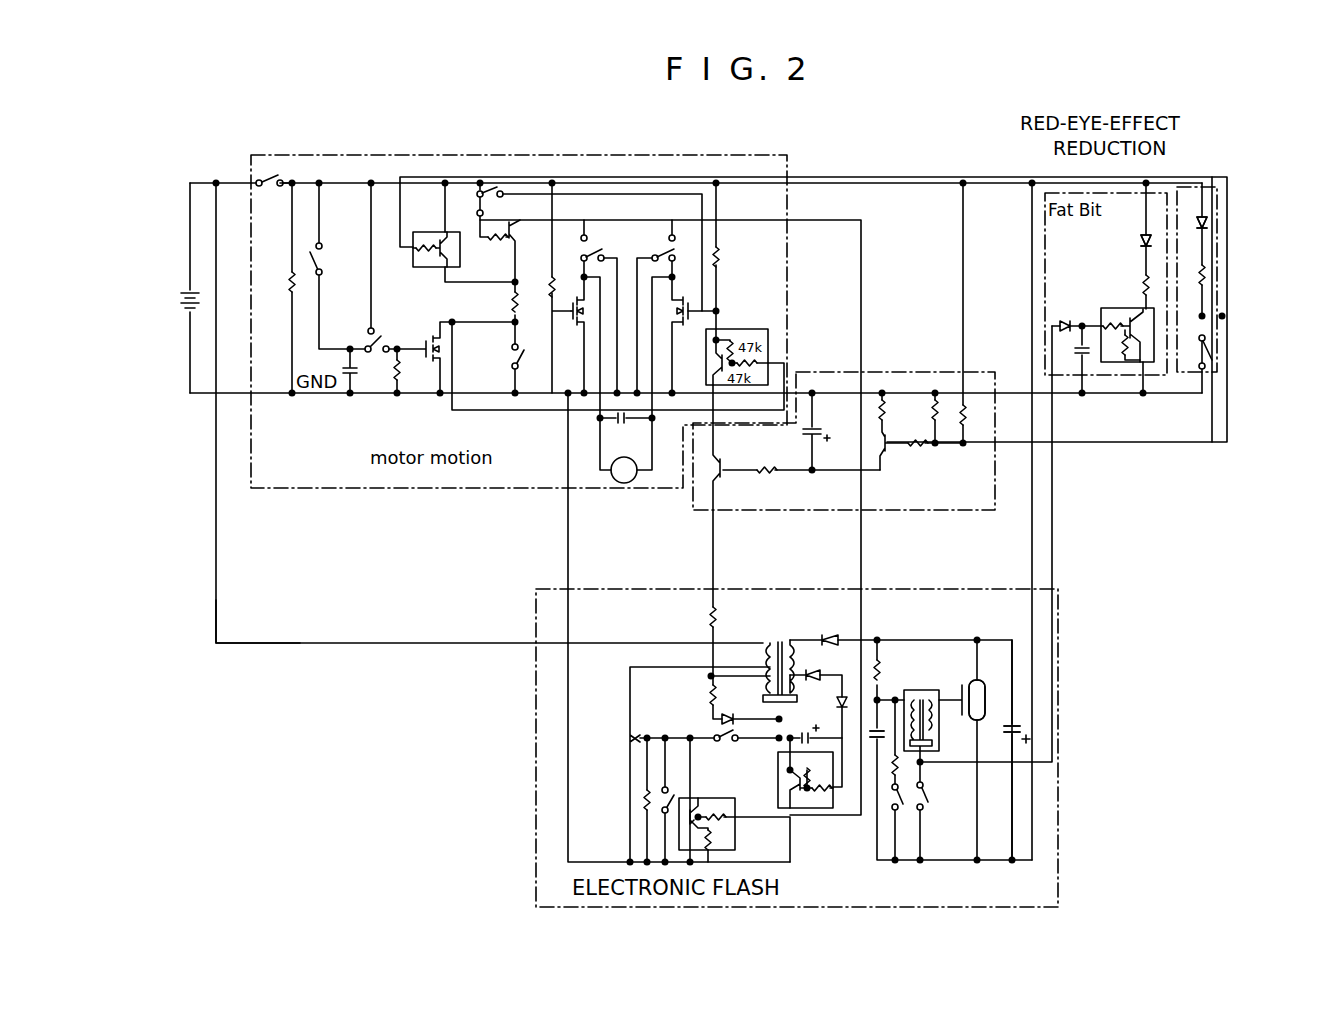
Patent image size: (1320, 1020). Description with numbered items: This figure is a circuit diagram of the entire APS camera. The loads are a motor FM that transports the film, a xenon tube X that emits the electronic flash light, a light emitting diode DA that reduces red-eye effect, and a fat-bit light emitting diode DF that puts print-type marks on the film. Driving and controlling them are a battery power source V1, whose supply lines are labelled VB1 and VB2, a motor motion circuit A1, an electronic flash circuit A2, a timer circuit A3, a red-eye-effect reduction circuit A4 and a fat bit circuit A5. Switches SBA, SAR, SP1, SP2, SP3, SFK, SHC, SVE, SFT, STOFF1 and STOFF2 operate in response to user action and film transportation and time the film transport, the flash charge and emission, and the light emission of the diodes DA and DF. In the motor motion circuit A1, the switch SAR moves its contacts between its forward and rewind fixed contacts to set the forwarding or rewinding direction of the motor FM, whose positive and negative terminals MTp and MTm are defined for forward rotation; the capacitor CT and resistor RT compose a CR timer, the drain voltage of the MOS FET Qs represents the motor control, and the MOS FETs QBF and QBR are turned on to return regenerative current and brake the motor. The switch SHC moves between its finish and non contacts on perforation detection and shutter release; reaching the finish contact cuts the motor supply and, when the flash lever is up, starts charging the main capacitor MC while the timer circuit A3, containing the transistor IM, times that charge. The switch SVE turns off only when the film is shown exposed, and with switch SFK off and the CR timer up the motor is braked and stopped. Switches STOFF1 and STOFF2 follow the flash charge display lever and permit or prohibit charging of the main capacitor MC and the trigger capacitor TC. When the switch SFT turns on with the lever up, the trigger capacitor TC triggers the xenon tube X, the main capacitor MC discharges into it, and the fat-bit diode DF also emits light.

The motor motion circuit A1 is at (498, 502).
The electronic flash circuit A2 is at (1060, 660).
The timer circuit A3 is at (910, 515).
The red-eye-effect reduction circuit A4 is at (1220, 205).
The fat bit circuit A5 is at (1045, 278).
The switch SBA is at (268, 174).
The switch SHC is at (490, 186).
The switch SFK is at (325, 252).
The switch SP1 is at (380, 338).
The MOS FET Qs is at (433, 335).
The switch SVE is at (511, 354).
The switch SAR is at (664, 246).
The MOS FET QBR is at (570, 335).
The MOS FET QBF is at (700, 321).
The motor FM is at (618, 484).
The negative terminal MT− MTm is at (579, 435).
The positive terminal MT+ MTp is at (670, 435).
The power source V1 is at (179, 314).
The battery voltage line 1 VB1 is at (286, 621).
The battery voltage line 2 VB2 is at (304, 174).
The capacitor CT is at (359, 371).
The resistor RT is at (407, 371).
The timer transistor IM is at (871, 455).
The fat-bit light emitting diode DF is at (1138, 240).
The light emitting diode DA is at (1210, 231).
The switch SP2 is at (1210, 350).
The switch SP3 is at (660, 794).
The switch ST OFF1 STOFF1 is at (887, 794).
The switch ST OFF2 STOFF2 is at (757, 757).
The switch SFT is at (932, 793).
The trigger capacitor TC is at (872, 730).
The xenon tube X is at (975, 678).
The main capacitor MC is at (1022, 728).